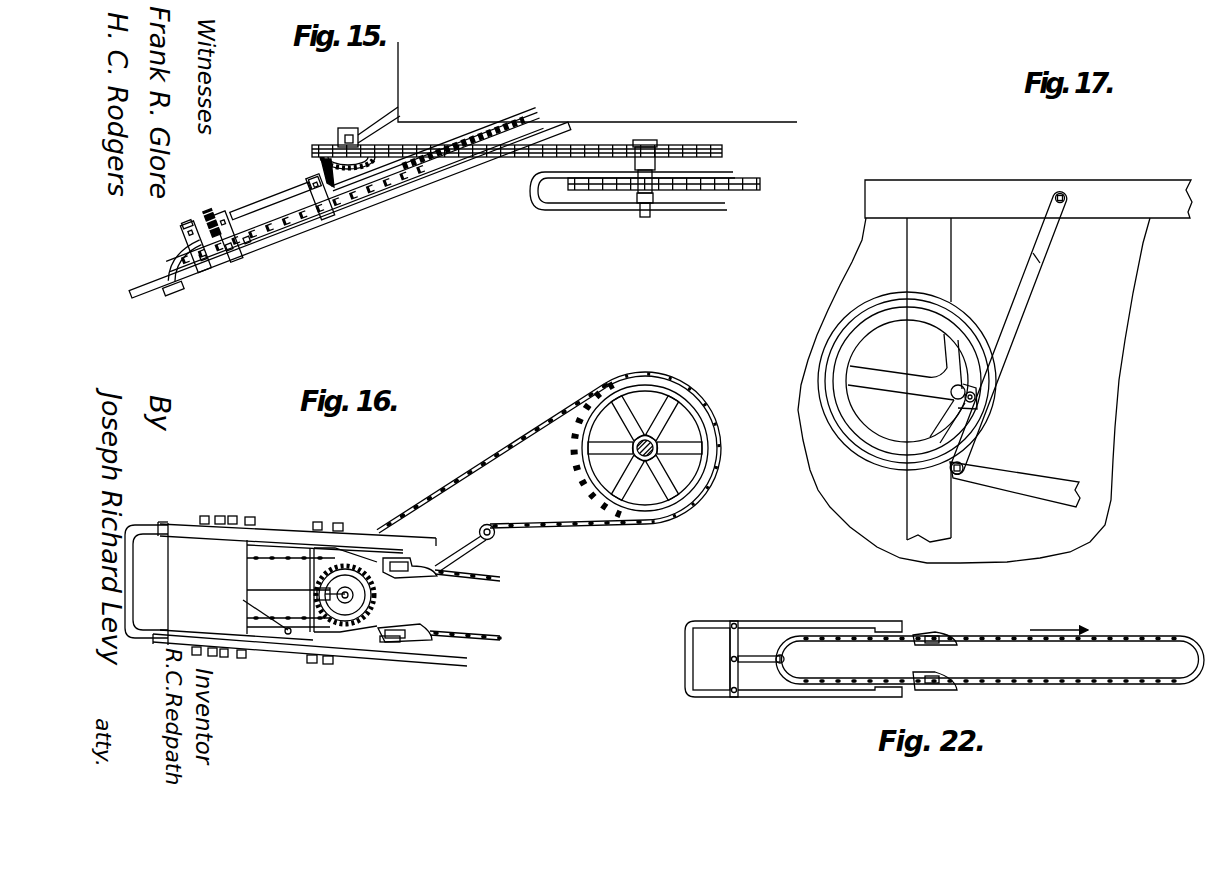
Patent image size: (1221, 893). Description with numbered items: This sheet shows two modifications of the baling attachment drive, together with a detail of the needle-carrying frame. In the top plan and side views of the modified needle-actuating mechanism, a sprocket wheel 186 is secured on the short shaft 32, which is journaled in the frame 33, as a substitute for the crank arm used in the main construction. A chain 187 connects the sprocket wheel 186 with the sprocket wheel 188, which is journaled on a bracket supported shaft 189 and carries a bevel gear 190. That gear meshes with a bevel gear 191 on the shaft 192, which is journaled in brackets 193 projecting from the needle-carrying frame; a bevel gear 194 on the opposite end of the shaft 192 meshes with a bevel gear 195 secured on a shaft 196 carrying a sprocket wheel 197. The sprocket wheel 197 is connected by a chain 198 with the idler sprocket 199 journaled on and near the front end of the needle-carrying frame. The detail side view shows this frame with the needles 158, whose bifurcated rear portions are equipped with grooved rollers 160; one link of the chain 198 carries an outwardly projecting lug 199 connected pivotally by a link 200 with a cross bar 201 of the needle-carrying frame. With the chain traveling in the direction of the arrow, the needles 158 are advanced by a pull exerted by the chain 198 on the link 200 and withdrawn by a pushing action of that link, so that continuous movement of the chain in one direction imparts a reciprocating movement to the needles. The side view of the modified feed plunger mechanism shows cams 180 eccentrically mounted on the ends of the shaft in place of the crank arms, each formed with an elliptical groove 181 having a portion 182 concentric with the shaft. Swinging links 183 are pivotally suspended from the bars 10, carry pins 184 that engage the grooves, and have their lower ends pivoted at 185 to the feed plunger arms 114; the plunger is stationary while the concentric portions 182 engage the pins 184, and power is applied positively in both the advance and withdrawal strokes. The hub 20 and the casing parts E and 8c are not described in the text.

In FIG. 17, the bars 10 is at (1028, 187).
In FIG. 17, the hub shaft 20 is at (953, 394).
In FIG. 15, the short shaft 32 is at (647, 217).
In FIG. 16, the short shaft 32 is at (645, 461).
In FIG. 15, the frame 33 is at (587, 213).
In FIG. 17, the feed plunger arms 114 is at (1016, 489).
In FIG. 16, the needles 158 is at (420, 638).
In FIG. 22, the needles 158 is at (938, 634).
In FIG. 16, the grooved rollers 160 is at (400, 634).
In FIG. 22, the grooved rollers 160 is at (920, 690).
In FIG. 17, the cams 180 is at (874, 372).
In FIG. 17, the elliptical grooves 181 is at (952, 326).
In FIG. 17, the concentric groove portion 182 is at (976, 390).
In FIG. 17, the swinging links 183 is at (1027, 300).
In FIG. 17, the pins 184 is at (978, 399).
In FIG. 17, the pivot 185 is at (968, 465).
In FIG. 15, the sprocket wheel 186 is at (677, 150).
In FIG. 16, the sprocket wheel 186 is at (588, 481).
In FIG. 15, the chain 187 is at (512, 159).
In FIG. 16, the chain 187 is at (490, 466).
In FIG. 15, the sprocket wheel 188 is at (322, 147).
In FIG. 16, the sprocket wheel 188 is at (378, 610).
In FIG. 15, the bracket supported shaft 189 is at (369, 121).
In FIG. 16, the bracket supported shaft 189 is at (352, 595).
In FIG. 15, the bevel gear 190 is at (320, 160).
In FIG. 16, the bevel gear 190 is at (350, 612).
In FIG. 15, the bevel gear 191 is at (318, 175).
In FIG. 16, the bevel gear 191 is at (320, 633).
In FIG. 15, the shaft 192 is at (270, 197).
In FIG. 16, the shaft 192 is at (291, 575).
In FIG. 15, the brackets 193 is at (325, 229).
In FIG. 16, the brackets 193 is at (311, 607).
In FIG. 15, the bevel gear 194 is at (215, 210).
In FIG. 15, the bevel gear 195 is at (187, 247).
In FIG. 15, the shaft 196 is at (197, 222).
In FIG. 15, the sprocket wheel 197 is at (187, 278).
In FIG. 15, the chain 198 is at (373, 188).
In FIG. 16, the chain 198 is at (493, 640).
In FIG. 22, the chain 198 is at (1067, 642).
In FIG. 15, the idler sprocket 199 is at (508, 122).
In FIG. 22, the idler sprocket 199 is at (784, 668).
In FIG. 22, the link 200 is at (768, 665).
In FIG. 22, the cross bar 201 is at (727, 677).
In FIG. 17, the casing E is at (1156, 277).
In FIG. 17, the casing wall 8c is at (1122, 336).